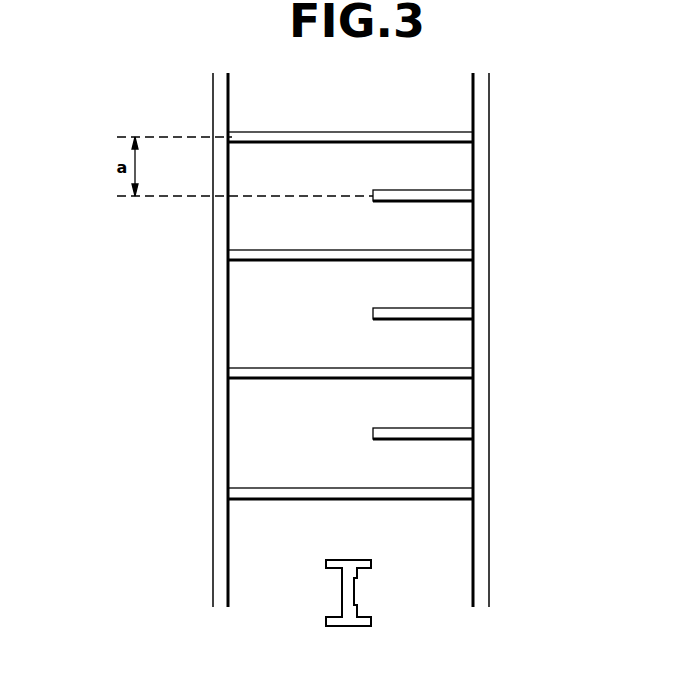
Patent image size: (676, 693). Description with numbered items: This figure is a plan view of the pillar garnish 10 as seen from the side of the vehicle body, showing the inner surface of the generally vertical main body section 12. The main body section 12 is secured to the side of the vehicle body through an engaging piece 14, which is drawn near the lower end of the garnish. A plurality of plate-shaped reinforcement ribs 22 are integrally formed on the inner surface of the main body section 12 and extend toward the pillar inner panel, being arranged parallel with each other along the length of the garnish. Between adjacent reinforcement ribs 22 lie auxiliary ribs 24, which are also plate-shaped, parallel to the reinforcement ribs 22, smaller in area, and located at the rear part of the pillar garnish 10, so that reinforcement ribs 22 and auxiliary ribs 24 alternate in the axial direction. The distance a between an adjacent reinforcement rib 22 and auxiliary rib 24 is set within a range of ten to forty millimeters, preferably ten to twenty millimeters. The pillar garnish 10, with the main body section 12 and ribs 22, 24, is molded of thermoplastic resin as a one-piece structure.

The pillar garnish 10 is at (493, 382).
The main body section 12 is at (491, 456).
The engaging piece 14 is at (372, 560).
The reinforcement ribs 22 is at (445, 132).
The auxiliary ribs 24 is at (432, 189).